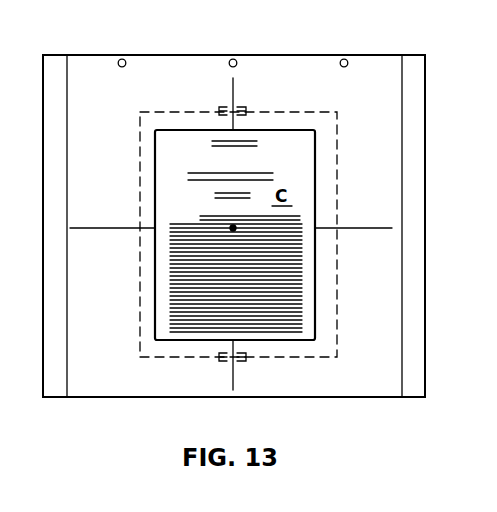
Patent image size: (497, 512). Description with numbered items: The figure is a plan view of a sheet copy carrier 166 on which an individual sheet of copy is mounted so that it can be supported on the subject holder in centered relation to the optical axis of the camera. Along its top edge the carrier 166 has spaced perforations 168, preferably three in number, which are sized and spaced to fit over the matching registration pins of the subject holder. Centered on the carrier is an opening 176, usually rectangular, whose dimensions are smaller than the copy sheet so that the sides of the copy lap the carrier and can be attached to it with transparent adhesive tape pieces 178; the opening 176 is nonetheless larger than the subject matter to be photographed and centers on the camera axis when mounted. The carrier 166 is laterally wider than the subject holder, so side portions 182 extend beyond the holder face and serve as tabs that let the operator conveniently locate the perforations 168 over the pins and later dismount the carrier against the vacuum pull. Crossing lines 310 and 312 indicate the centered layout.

The carrier 166 is at (372, 58).
The portions (tabs) 182 is at (55, 55).
The perforations 168 is at (125, 59).
The opening 176 is at (316, 153).
The vertical center line 312 is at (232, 89).
The horizontal center line 310 is at (121, 226).
The transparent adhesive tape pieces 178 is at (241, 108).